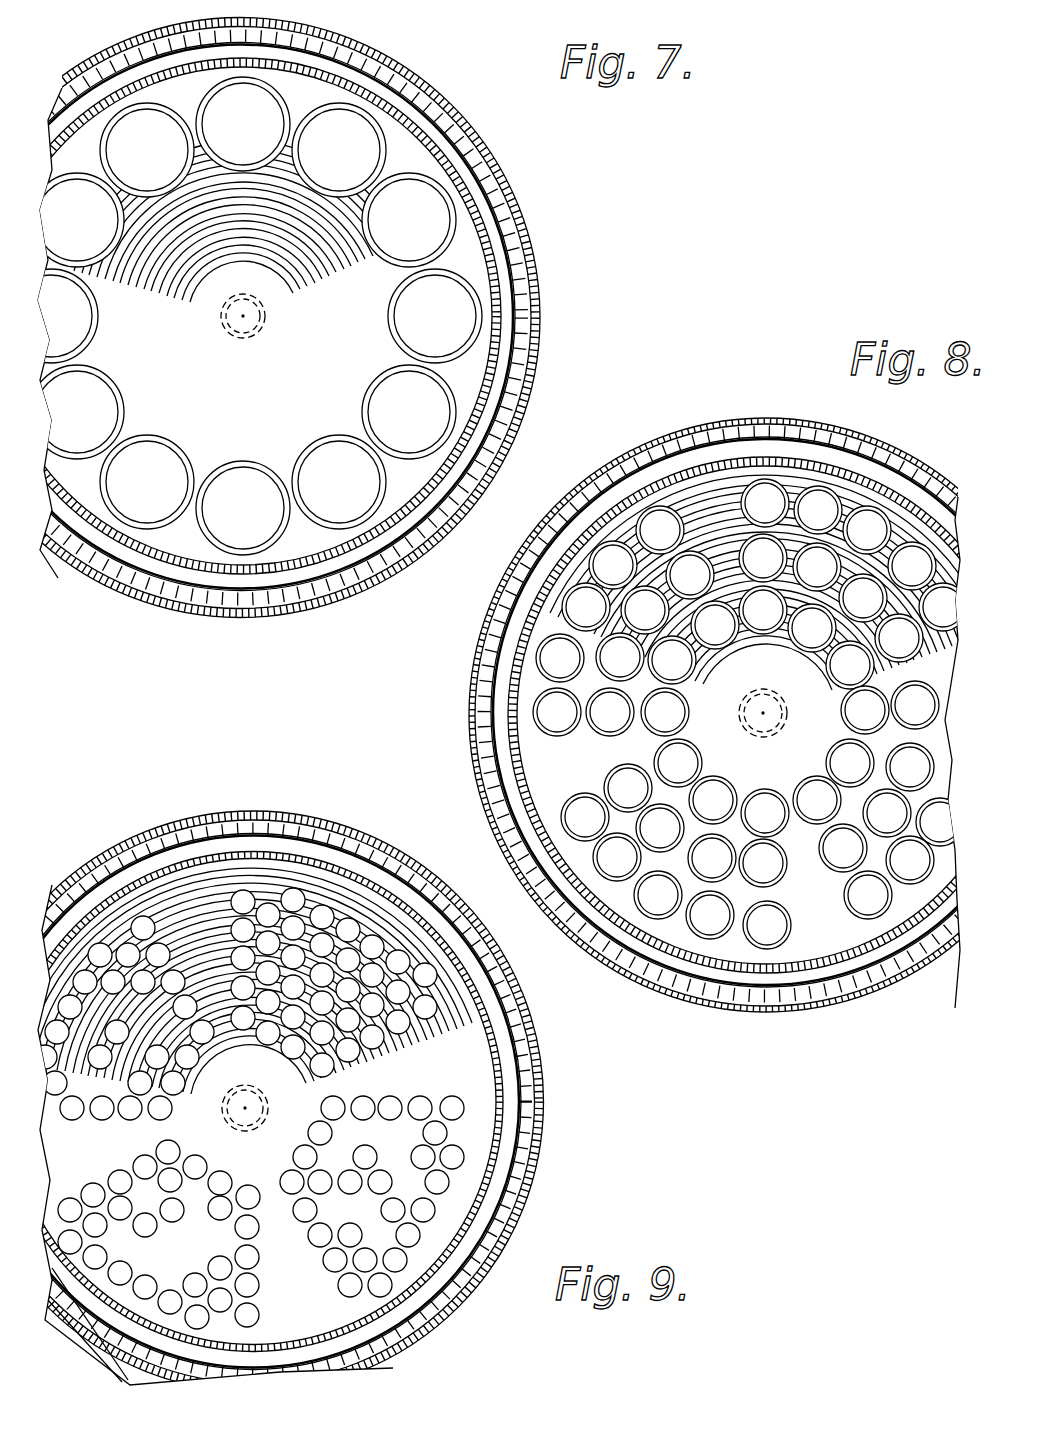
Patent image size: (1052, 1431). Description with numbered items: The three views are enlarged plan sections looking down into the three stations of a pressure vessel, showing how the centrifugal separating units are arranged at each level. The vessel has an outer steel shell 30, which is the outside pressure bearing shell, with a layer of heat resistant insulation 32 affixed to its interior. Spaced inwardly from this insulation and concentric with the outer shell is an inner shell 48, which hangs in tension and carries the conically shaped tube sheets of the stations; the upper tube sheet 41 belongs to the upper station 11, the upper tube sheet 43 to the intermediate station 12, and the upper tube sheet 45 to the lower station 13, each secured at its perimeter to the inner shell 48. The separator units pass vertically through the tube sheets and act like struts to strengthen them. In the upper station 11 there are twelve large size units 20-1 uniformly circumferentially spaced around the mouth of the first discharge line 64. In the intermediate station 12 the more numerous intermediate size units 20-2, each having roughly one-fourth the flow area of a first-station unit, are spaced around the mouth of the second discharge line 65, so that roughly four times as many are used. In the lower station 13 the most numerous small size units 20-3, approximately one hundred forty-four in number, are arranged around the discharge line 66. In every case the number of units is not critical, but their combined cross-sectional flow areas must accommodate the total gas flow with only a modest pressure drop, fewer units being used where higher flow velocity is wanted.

In FIG. 7, the upper station 11 is at (520, 302).
In FIG. 8, the intermediate station 12 is at (490, 722).
In FIG. 9, the lower station 13 is at (530, 1137).
In FIG. 7, the large size units 20-1 is at (470, 248).
In FIG. 8, the intermediate size units 20-2 is at (540, 668).
In FIG. 9, the small size units 20-3 is at (352, 922).
In FIG. 7, the outer steel shell 30 is at (508, 165).
In FIG. 8, the outer steel shell 30 is at (668, 432).
In FIG. 9, the outer steel shell 30 is at (176, 832).
In FIG. 7, the heat resistant insulation 32 is at (482, 135).
In FIG. 8, the heat resistant insulation 32 is at (625, 462).
In FIG. 9, the heat resistant insulation 32 is at (256, 826).
In FIG. 7, the upper tube sheet 41 is at (300, 92).
In FIG. 8, the upper tube sheet 43 is at (745, 492).
In FIG. 9, the upper tube sheet 45 is at (462, 1052).
In FIG. 7, the inner shell 48 is at (412, 128).
In FIG. 8, the inner shell 48 is at (722, 458).
In FIG. 9, the inner shell 48 is at (130, 875).
In FIG. 7, the first discharge line 64 is at (236, 338).
In FIG. 8, the second discharge line 65 is at (752, 737).
In FIG. 9, the discharge line 66 is at (232, 1098).